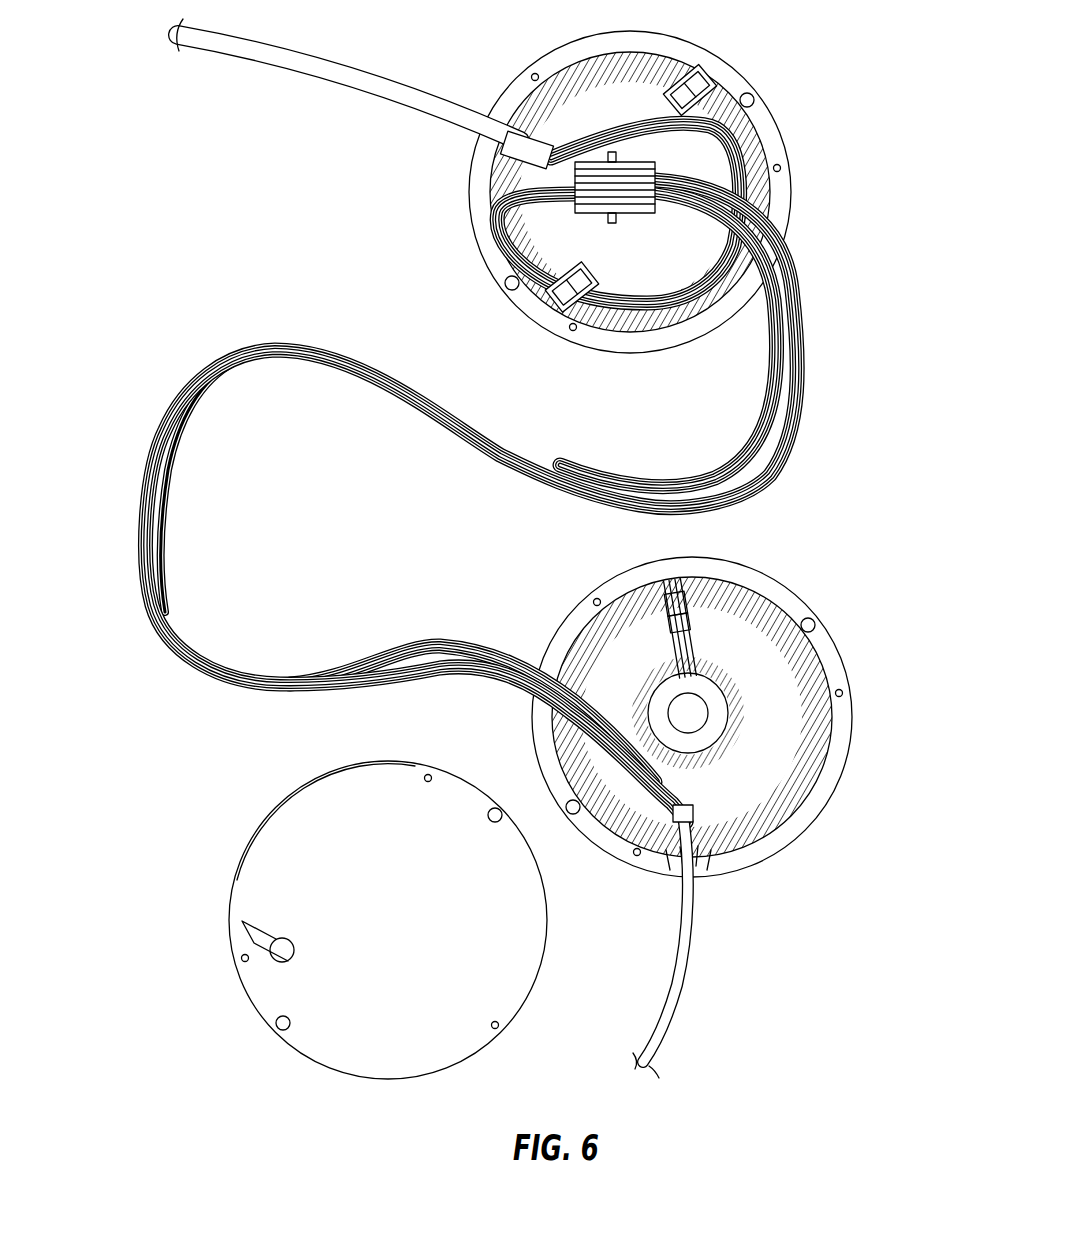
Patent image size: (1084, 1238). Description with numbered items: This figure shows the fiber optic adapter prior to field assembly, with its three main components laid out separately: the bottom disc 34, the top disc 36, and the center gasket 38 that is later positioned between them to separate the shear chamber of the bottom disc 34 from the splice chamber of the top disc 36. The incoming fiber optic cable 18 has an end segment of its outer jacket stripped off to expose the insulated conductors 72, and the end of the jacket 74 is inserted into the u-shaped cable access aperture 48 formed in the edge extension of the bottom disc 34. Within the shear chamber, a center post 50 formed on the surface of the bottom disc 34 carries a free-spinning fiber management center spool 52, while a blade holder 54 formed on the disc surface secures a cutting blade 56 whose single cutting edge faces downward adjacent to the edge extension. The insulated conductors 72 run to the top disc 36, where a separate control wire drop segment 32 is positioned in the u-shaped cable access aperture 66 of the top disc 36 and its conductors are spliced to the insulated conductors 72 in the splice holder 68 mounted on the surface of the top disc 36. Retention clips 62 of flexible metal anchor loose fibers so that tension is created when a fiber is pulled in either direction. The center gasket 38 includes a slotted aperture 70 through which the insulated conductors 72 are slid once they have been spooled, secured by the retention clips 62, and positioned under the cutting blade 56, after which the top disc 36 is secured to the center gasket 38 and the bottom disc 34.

The fiber optic cable 18 is at (690, 994).
The control wire drop segment 32 is at (442, 98).
The bottom disc 34 is at (760, 570).
The top disc 36 is at (786, 140).
The center gasket 38 is at (292, 828).
The u-shaped cable access aperture 48 is at (672, 860).
The center post 50 is at (690, 722).
The fiber management center spool 52 is at (672, 690).
The blade holder 54 is at (694, 634).
The cutting blade 56 is at (668, 606).
The retention clip 62 is at (692, 78).
The u-shaped cable access aperture 66 is at (486, 154).
The splice holder 68 is at (636, 212).
The aperture 70 is at (268, 930).
The insulated conductors 72 is at (808, 330).
The jacket 74 is at (752, 848).